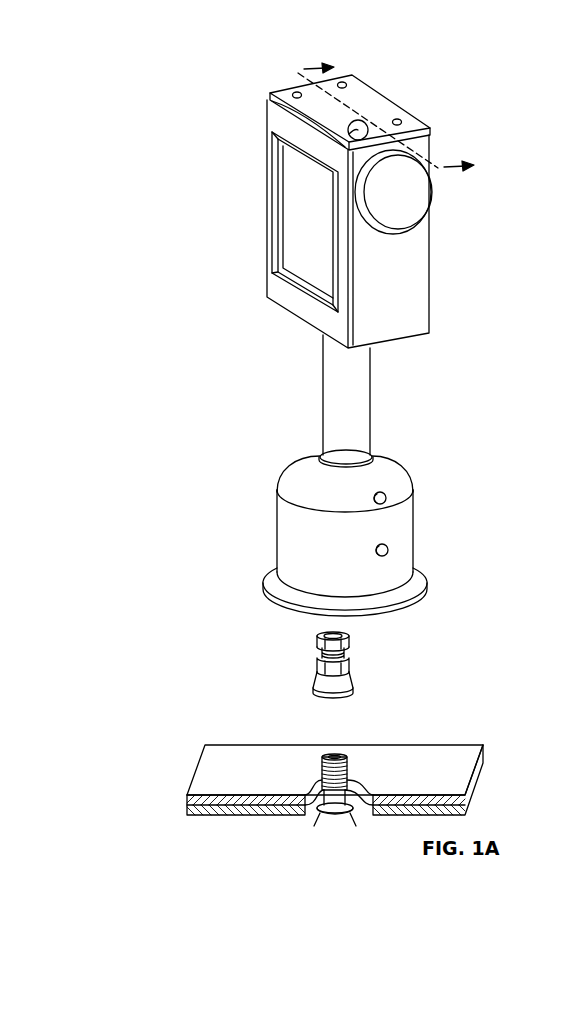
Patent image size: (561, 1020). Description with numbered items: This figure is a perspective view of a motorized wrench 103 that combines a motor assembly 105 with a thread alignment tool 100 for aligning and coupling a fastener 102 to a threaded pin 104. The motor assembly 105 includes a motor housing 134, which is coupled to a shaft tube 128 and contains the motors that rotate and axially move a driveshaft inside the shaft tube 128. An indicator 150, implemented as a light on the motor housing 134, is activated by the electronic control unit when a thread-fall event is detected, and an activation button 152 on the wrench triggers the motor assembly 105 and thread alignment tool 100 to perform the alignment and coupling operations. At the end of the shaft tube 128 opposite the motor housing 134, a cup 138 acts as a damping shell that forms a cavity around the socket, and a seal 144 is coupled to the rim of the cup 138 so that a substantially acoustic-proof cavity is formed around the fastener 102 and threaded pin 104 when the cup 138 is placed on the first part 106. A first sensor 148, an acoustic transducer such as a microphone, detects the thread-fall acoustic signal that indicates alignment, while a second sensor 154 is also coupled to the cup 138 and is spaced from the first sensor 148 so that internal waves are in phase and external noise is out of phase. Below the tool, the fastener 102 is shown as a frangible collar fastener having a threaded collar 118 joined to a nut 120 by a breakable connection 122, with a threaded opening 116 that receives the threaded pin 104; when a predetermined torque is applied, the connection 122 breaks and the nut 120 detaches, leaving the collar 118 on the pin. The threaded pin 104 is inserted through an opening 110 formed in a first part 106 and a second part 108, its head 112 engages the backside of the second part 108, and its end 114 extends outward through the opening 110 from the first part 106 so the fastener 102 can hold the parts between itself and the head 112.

The motorized wrench 103 is at (131, 60).
The motor assembly 105 is at (253, 86).
The thread alignment tool 100 is at (253, 336).
The indicator 150 is at (271, 104).
The activation button 152 is at (415, 197).
The motor housing 134 is at (413, 285).
The shaft tube 128 is at (362, 417).
The cup 138 is at (400, 523).
The second sensor 154 is at (386, 498).
The first sensor 148 is at (390, 550).
The seal 144 is at (400, 598).
The fastener 102 is at (352, 673).
The nut 120 is at (320, 643).
The breakable connection 122 is at (318, 665).
The threaded collar 118 is at (313, 688).
The threaded opening 116 is at (322, 702).
The first part 106 is at (190, 798).
The second part 108 is at (190, 812).
The opening 110 is at (358, 772).
The end 114 is at (340, 757).
The head 112 is at (318, 812).
The threaded pin 104 is at (342, 813).